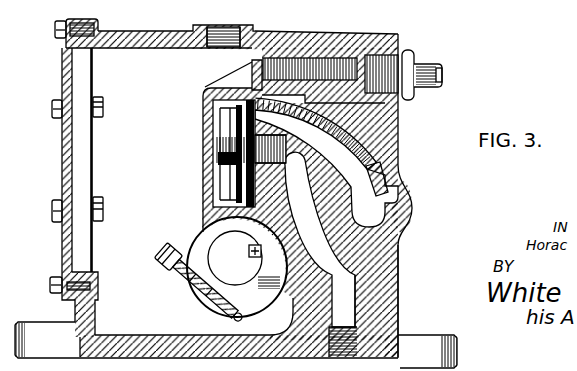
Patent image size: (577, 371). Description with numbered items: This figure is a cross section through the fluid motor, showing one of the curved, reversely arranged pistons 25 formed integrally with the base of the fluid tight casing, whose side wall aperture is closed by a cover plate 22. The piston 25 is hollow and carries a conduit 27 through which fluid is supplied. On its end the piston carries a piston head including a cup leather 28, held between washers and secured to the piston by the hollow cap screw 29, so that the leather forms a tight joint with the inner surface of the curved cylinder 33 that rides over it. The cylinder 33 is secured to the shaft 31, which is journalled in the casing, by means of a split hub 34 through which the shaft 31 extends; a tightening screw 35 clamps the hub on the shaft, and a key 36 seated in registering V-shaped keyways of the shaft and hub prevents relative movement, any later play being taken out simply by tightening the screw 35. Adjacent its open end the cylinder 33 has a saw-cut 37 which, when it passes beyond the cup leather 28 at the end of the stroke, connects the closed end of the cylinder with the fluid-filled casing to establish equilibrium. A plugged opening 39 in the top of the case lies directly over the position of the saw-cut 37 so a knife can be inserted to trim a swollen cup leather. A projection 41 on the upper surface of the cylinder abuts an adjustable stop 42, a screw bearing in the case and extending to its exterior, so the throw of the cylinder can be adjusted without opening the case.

The cover plate 22 is at (63, 78).
The curved piston 25 is at (350, 181).
The conduit 27 is at (353, 263).
The cup leather 28 is at (242, 178).
The hollow cap screw 29 is at (226, 133).
The shaft 31 is at (235, 258).
The cylinder 33 is at (375, 148).
The split hub 34 is at (203, 234).
The tightening screw 35 is at (170, 259).
The key 36 is at (250, 242).
The saw-cut 37 is at (384, 174).
The plugged opening 39 is at (228, 34).
The projection 41 is at (252, 63).
The adjustable stop 42 is at (313, 62).